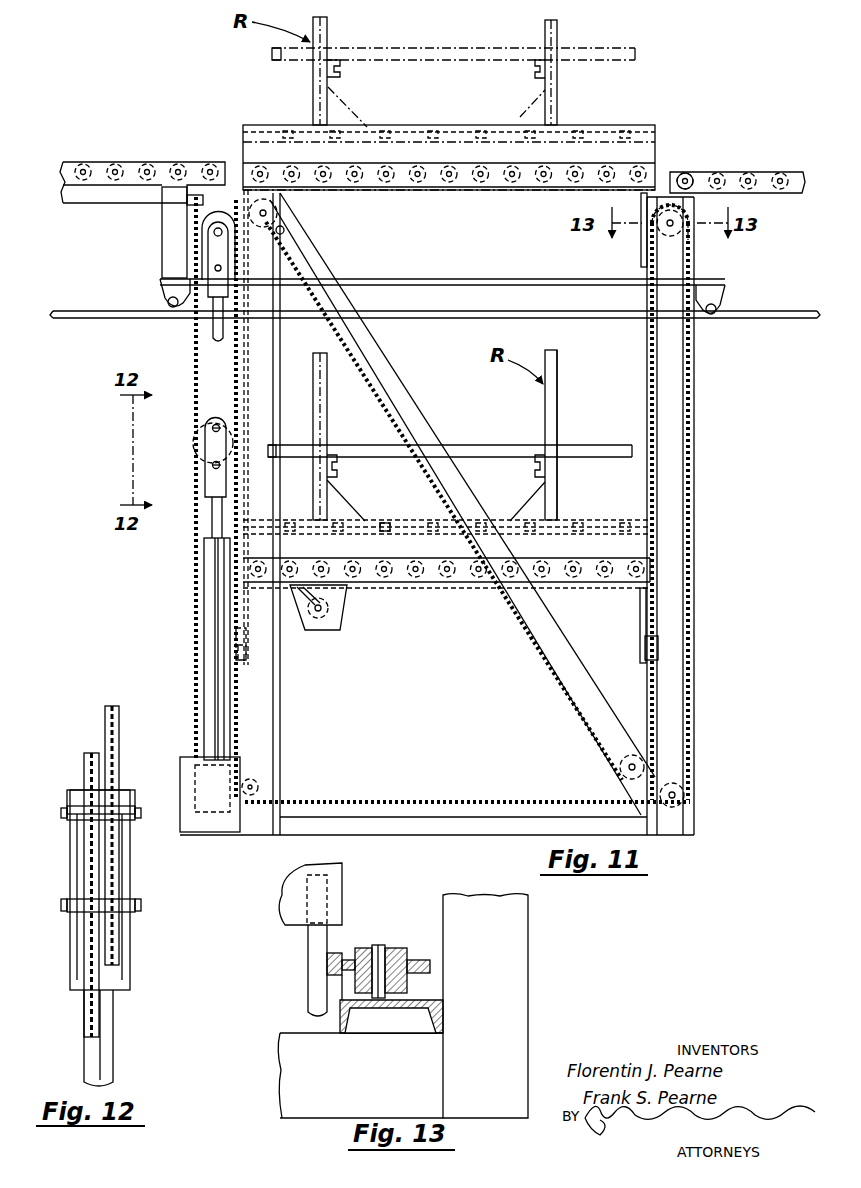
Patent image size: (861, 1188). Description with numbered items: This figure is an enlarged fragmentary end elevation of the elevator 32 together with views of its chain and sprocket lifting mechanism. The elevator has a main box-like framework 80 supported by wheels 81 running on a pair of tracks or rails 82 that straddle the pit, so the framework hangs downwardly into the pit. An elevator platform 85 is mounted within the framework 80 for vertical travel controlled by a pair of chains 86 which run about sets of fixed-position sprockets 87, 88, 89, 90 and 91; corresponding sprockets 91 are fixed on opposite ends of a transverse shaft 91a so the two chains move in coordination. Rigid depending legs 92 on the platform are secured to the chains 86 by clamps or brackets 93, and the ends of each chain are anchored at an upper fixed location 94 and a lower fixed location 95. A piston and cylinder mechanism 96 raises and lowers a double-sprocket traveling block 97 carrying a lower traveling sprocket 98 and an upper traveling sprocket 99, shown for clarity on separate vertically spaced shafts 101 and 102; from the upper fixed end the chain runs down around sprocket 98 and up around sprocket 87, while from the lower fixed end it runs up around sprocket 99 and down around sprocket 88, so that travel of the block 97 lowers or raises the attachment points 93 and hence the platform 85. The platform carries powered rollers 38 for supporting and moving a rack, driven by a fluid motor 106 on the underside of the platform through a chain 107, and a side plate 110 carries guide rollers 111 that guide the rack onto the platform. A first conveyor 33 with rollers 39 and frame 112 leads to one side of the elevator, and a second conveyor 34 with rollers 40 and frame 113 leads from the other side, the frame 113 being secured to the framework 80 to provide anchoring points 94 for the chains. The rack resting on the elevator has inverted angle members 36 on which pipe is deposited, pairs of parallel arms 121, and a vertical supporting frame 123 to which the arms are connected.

In FIG. 11, the elevator 32 is at (455, 372).
In FIG. 11, the first conveyor 33 is at (746, 171).
In FIG. 11, the second conveyor 34 is at (142, 180).
In FIG. 11, the inverted angle members 36 is at (440, 48).
In FIG. 11, the powered rollers 38 is at (372, 563).
In FIG. 11, the rollers 39 is at (782, 172).
In FIG. 11, the rollers 40 is at (142, 161).
In FIG. 11, the main box-like framework 80 is at (697, 490).
In FIG. 13, the main box-like framework 80 is at (520, 1012).
In FIG. 11, the wheels 81 is at (165, 303).
In FIG. 11, the tracks or rails 82 is at (88, 311).
In FIG. 11, the elevator platform 85 is at (463, 188).
In FIG. 13, the elevator platform 85 is at (283, 880).
In FIG. 11, the chains 86 is at (240, 387).
In FIG. 12, the chains 86 is at (106, 712).
In FIG. 13, the chains 86 is at (340, 965).
In FIG. 11, the fixed-position sprocket 87 is at (284, 231).
In FIG. 11, the fixed-position sprocket 88 is at (265, 773).
In FIG. 11, the fixed-position sprocket 89 is at (688, 790).
In FIG. 11, the fixed-position sprocket 90 is at (690, 258).
In FIG. 13, the fixed-position sprocket 90 is at (410, 960).
In FIG. 11, the fixed-position sprocket 91 is at (630, 755).
In FIG. 11, the transverse shaft 91a is at (622, 770).
In FIG. 11, the depending legs 92 is at (278, 205).
In FIG. 13, the depending legs 92 is at (312, 958).
In FIG. 11, the clamps or brackets 93 is at (240, 655).
In FIG. 13, the clamps or brackets 93 is at (335, 953).
In FIG. 11, the upper fixed location 94 is at (203, 198).
In FIG. 11, the lower fixed location 95 is at (188, 754).
In FIG. 11, the piston and cylinder mechanism 96 is at (207, 576).
In FIG. 11, the double-sprocket traveling block 97 is at (226, 490).
In FIG. 12, the double-sprocket traveling block 97 is at (130, 983).
In FIG. 11, the lower traveling sprocket 98 is at (205, 457).
In FIG. 12, the lower traveling sprocket 98 is at (120, 912).
In FIG. 11, the upper traveling sprocket 99 is at (203, 425).
In FIG. 12, the upper traveling sprocket 99 is at (75, 815).
In FIG. 11, the shaft 101 is at (205, 470).
In FIG. 12, the shaft 101 is at (140, 903).
In FIG. 11, the shaft 102 is at (205, 437).
In FIG. 12, the shaft 102 is at (138, 816).
In FIG. 11, the fluid motor 106 is at (460, 617).
In FIG. 11, the chain 107 is at (318, 631).
In FIG. 11, the side plate 110 is at (586, 546).
In FIG. 11, the guide rollers 111 is at (400, 526).
In FIG. 11, the frame 112 is at (700, 172).
In FIG. 11, the frame 113 is at (165, 227).
In FIG. 11, the arms 121 is at (338, 465).
In FIG. 11, the supporting frame 123 is at (557, 423).